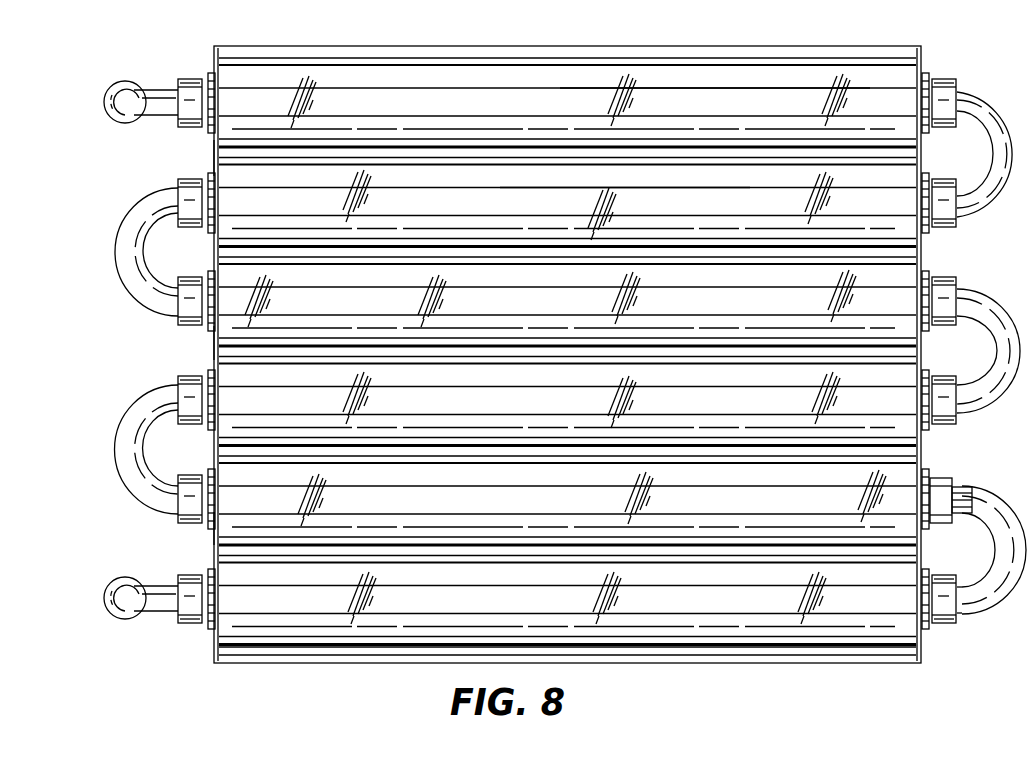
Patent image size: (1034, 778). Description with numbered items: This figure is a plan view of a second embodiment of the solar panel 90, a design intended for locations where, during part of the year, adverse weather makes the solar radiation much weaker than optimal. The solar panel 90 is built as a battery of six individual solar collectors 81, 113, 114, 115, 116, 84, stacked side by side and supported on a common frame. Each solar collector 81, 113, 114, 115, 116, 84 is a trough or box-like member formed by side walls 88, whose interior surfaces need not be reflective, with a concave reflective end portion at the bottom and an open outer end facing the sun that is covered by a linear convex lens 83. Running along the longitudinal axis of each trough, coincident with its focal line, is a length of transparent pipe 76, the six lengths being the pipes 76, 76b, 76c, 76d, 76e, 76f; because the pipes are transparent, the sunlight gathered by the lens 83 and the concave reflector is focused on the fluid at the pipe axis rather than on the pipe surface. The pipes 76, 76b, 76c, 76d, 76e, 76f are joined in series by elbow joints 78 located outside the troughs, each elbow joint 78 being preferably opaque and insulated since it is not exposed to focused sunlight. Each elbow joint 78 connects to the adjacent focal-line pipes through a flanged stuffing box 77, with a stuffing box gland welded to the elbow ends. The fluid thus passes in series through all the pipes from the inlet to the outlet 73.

The solar panel 90 is at (318, 40).
The transparent pipe 76 is at (513, 88).
The transparent pipe 76b is at (487, 191).
The transparent pipe 76c is at (508, 291).
The transparent pipe 76d is at (512, 392).
The transparent pipe 76e is at (531, 491).
The transparent pipe 76f is at (665, 591).
The solar collector 81 is at (211, 50).
The outlet 73 is at (166, 576).
The elbow joint 78 is at (122, 240).
The flanged stuffing box 77 is at (975, 462).
The linear convex lens 83 is at (733, 94).
The side wall 88 is at (612, 190).
The solar collector 84 is at (187, 645).
The solar collector 113 is at (203, 157).
The solar collector 114 is at (206, 343).
The solar collector 115 is at (200, 369).
The solar collector 116 is at (178, 527).